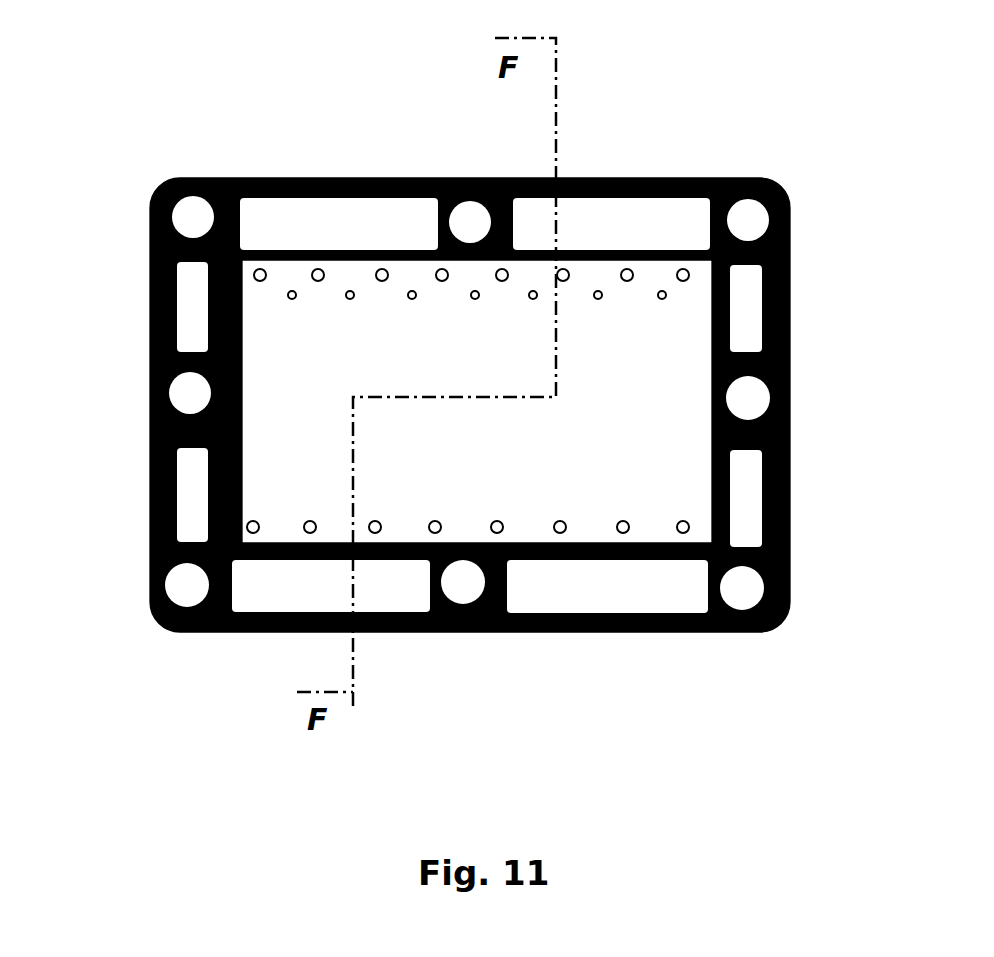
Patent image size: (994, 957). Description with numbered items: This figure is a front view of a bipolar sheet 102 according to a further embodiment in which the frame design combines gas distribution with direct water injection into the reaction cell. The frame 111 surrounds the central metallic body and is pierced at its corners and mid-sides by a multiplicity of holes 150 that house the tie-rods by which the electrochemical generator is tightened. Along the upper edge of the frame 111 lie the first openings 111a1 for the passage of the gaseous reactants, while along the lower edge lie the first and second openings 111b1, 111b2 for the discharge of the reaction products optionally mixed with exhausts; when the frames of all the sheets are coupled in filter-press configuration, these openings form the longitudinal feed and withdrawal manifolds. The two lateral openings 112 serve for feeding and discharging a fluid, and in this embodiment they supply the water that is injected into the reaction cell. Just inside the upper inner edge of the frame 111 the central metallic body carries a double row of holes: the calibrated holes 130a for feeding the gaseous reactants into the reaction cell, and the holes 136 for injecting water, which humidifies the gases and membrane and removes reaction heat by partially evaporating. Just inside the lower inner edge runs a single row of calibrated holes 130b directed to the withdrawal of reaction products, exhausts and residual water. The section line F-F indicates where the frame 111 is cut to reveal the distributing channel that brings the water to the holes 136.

The bipolar sheet 102 is at (430, 161).
The frame 111 is at (148, 256).
The first opening 111a1 is at (667, 120).
The first opening 111b1 is at (295, 588).
The second opening 111b2 is at (633, 590).
The openings 112 is at (185, 497).
The calibrated holes 130a is at (733, 230).
The calibrated holes 130b is at (698, 527).
The holes 136 is at (268, 320).
The holes 150 is at (177, 588).